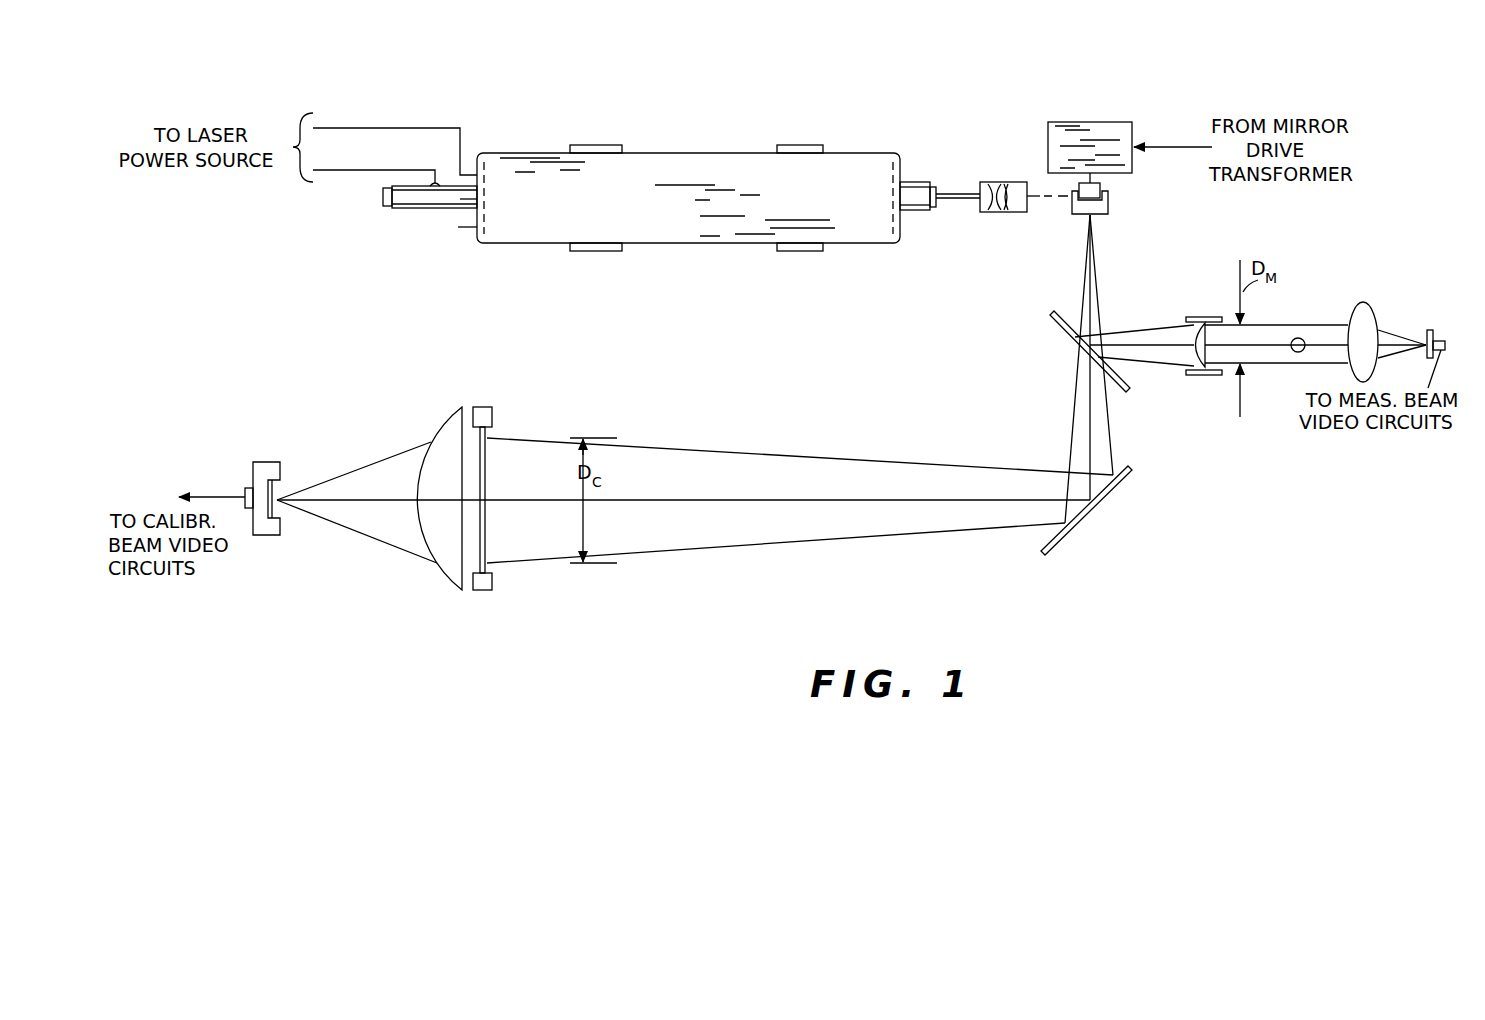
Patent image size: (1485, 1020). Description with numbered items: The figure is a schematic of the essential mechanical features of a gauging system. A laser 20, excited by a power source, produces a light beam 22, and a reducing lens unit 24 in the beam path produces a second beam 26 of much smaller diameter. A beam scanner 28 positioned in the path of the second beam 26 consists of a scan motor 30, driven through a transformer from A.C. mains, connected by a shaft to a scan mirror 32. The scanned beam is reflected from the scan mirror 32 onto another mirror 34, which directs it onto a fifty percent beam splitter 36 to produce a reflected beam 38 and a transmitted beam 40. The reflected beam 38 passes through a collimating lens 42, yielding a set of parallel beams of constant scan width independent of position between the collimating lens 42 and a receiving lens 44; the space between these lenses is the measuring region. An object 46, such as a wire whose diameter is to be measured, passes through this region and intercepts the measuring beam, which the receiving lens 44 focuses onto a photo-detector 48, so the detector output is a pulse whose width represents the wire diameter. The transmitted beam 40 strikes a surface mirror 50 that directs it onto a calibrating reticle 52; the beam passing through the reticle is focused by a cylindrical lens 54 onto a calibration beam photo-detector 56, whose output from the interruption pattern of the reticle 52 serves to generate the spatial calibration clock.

The laser 20 is at (673, 153).
The light beam 22 is at (962, 192).
The reducing lens unit 24 is at (996, 174).
The second beam 26 is at (1046, 203).
The beam scanner 28 is at (1118, 153).
The scan motor 30 is at (1053, 122).
The scan mirror 32 is at (1101, 185).
The mirror 34 is at (1115, 212).
The beam splitter 36 is at (1067, 335).
The reflected beam 38 is at (1128, 316).
The transmitted beam 40 is at (1068, 396).
The collimating lens 42 is at (1192, 360).
The receiving lens 44 is at (1374, 307).
The object (wire) 46 is at (1298, 338).
The photo-detector 48 is at (1436, 330).
The surface mirror 50 is at (1096, 507).
The calibrating reticle 52 is at (487, 565).
The cylindrical lens 54 is at (437, 565).
The calibration beam photo-detector 56 is at (273, 462).